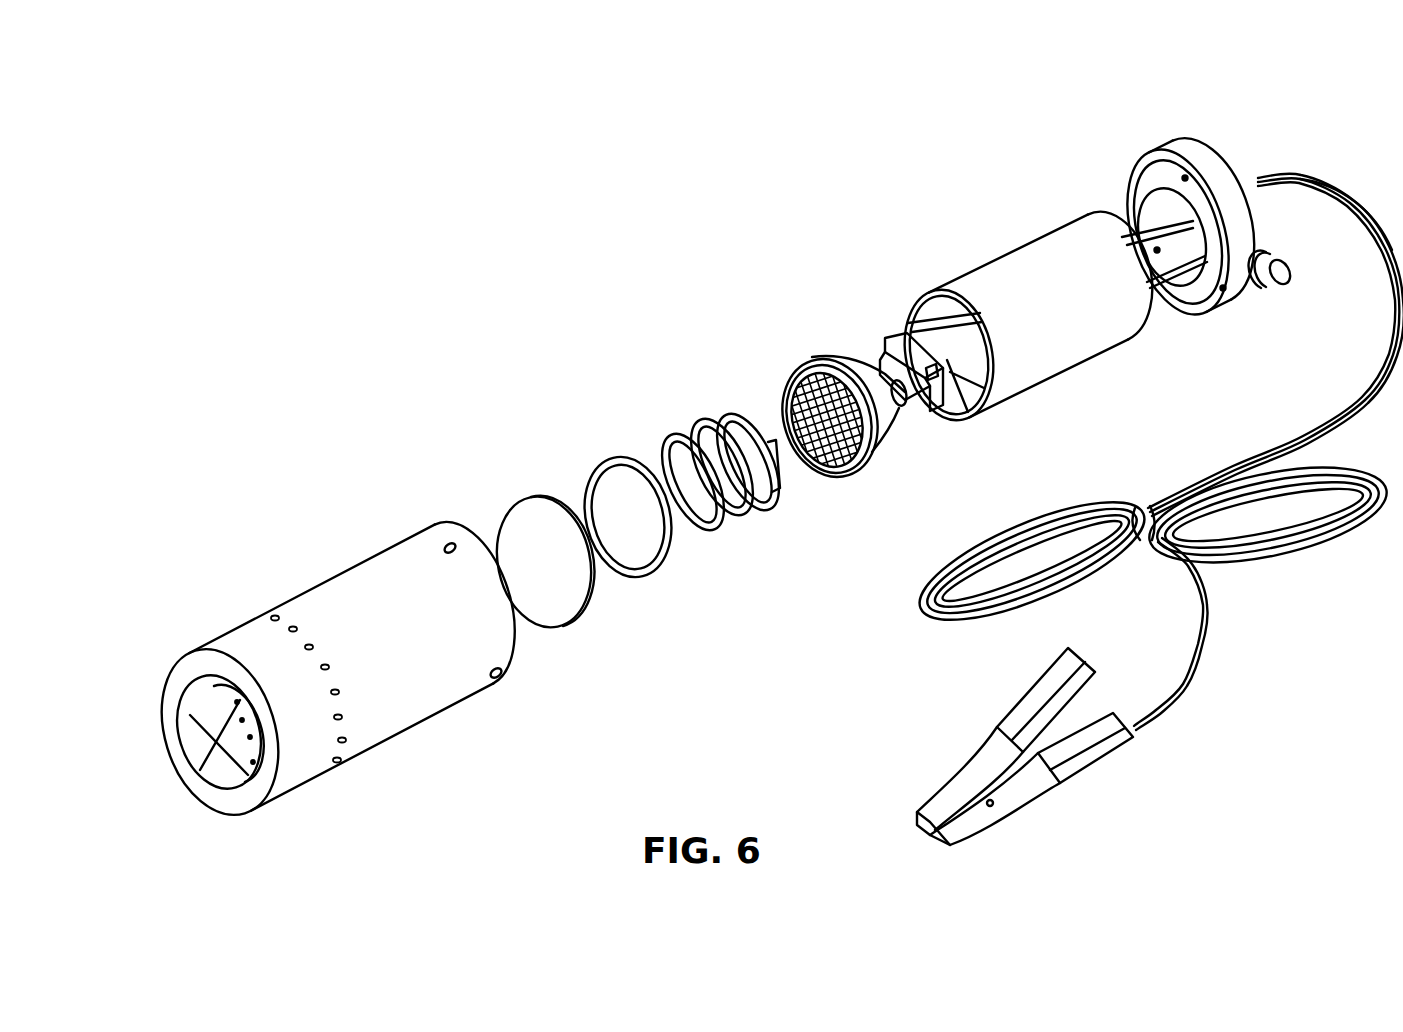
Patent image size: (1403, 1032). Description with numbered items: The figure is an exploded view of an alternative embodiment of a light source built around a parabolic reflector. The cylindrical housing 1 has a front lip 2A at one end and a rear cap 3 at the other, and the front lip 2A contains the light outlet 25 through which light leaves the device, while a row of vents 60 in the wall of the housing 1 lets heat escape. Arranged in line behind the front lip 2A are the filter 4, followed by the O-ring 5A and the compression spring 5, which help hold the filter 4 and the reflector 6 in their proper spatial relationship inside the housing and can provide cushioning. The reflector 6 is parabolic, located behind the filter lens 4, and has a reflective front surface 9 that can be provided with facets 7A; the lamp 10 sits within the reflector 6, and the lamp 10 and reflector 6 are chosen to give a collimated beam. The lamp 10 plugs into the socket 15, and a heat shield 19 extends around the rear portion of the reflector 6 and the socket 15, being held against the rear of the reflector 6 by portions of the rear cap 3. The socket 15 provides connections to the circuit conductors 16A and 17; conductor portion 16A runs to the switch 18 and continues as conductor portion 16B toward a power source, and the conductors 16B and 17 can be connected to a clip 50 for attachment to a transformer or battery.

The housing 1 is at (423, 710).
The front lip 2A is at (187, 716).
The light outlet 25 is at (227, 740).
The vents 60 is at (277, 612).
The filter 4 is at (568, 626).
The O-ring 5A is at (643, 578).
The compression spring 5 is at (737, 527).
The reflector 6 is at (800, 357).
The facets 7A is at (847, 478).
The reflective front surface 9 is at (812, 470).
The lamp 10 is at (792, 402).
The socket 15 is at (892, 342).
The conductor portion 16A is at (968, 414).
The conductor portion 16B is at (1325, 207).
The circuit conductor 17 is at (905, 315).
The switch 18 is at (1280, 285).
The heat shield 19 is at (1033, 390).
The rear cap 3 is at (1175, 142).
The clip 50 is at (985, 812).